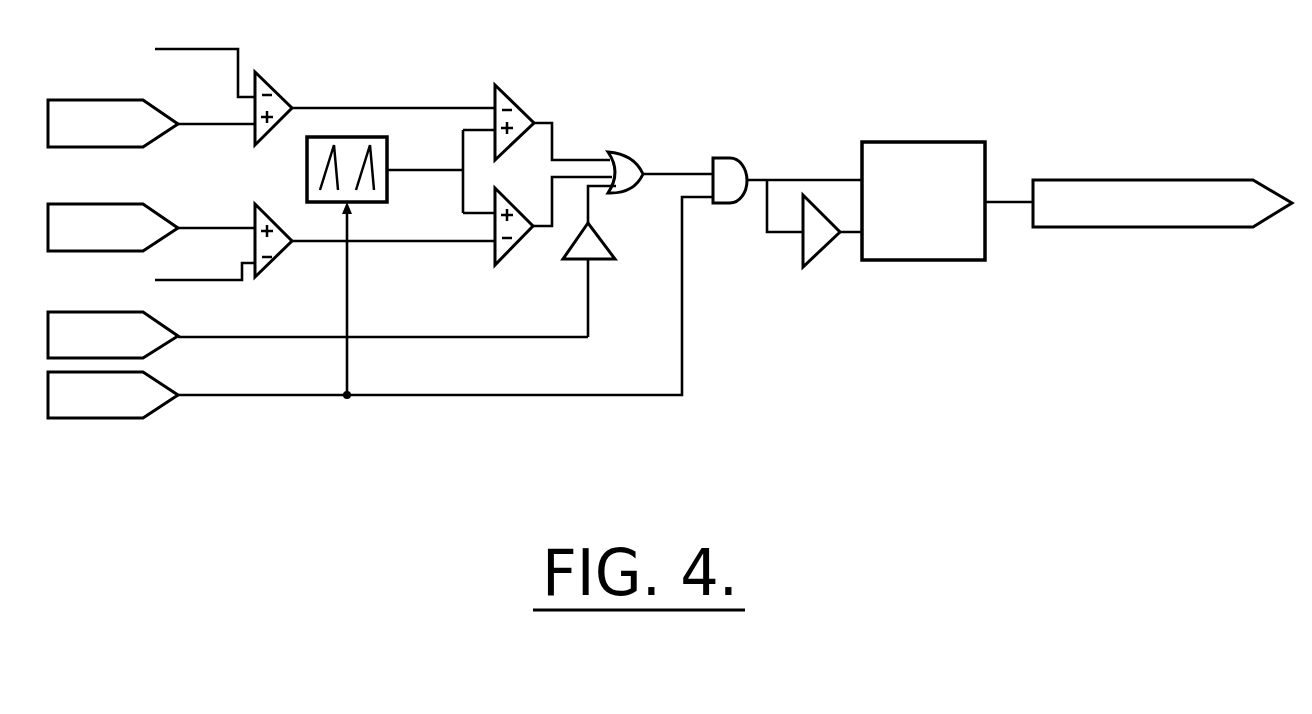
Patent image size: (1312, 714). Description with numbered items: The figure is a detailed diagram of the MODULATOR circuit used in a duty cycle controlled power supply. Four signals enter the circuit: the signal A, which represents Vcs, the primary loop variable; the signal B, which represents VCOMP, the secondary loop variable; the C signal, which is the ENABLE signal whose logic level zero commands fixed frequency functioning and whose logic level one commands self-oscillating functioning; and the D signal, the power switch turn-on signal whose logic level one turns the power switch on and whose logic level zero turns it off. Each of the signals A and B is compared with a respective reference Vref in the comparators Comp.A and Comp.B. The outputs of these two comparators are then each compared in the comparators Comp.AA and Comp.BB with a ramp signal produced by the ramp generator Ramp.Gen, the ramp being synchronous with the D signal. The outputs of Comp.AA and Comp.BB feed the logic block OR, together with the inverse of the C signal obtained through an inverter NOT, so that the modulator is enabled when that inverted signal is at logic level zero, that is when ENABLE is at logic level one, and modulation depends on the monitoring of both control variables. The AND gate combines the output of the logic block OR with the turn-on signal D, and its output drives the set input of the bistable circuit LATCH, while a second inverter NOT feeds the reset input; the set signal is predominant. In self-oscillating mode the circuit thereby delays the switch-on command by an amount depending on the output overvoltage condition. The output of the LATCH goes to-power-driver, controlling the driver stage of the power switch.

The signal A is at (151, 123).
The signal B is at (151, 227).
The C signal C is at (318, 335).
The D signal D is at (380, 307).
The reference Vref is at (170, 162).
The COMPA circuit Comp.A is at (375, 87).
The COMPB circuit Comp.B is at (350, 264).
The COMPAA circuit Comp.AA is at (543, 93).
The COMPBB circuit Comp.BB is at (500, 249).
The ramp signal generator Ramp.Gen is at (312, 262).
The inverter NOT is at (712, 258).
The logic block OR is at (652, 151).
The AND gate AND is at (781, 161).
The bistable circuit LATCH is at (947, 200).
The output to power driver to-power-driver is at (1162, 203).